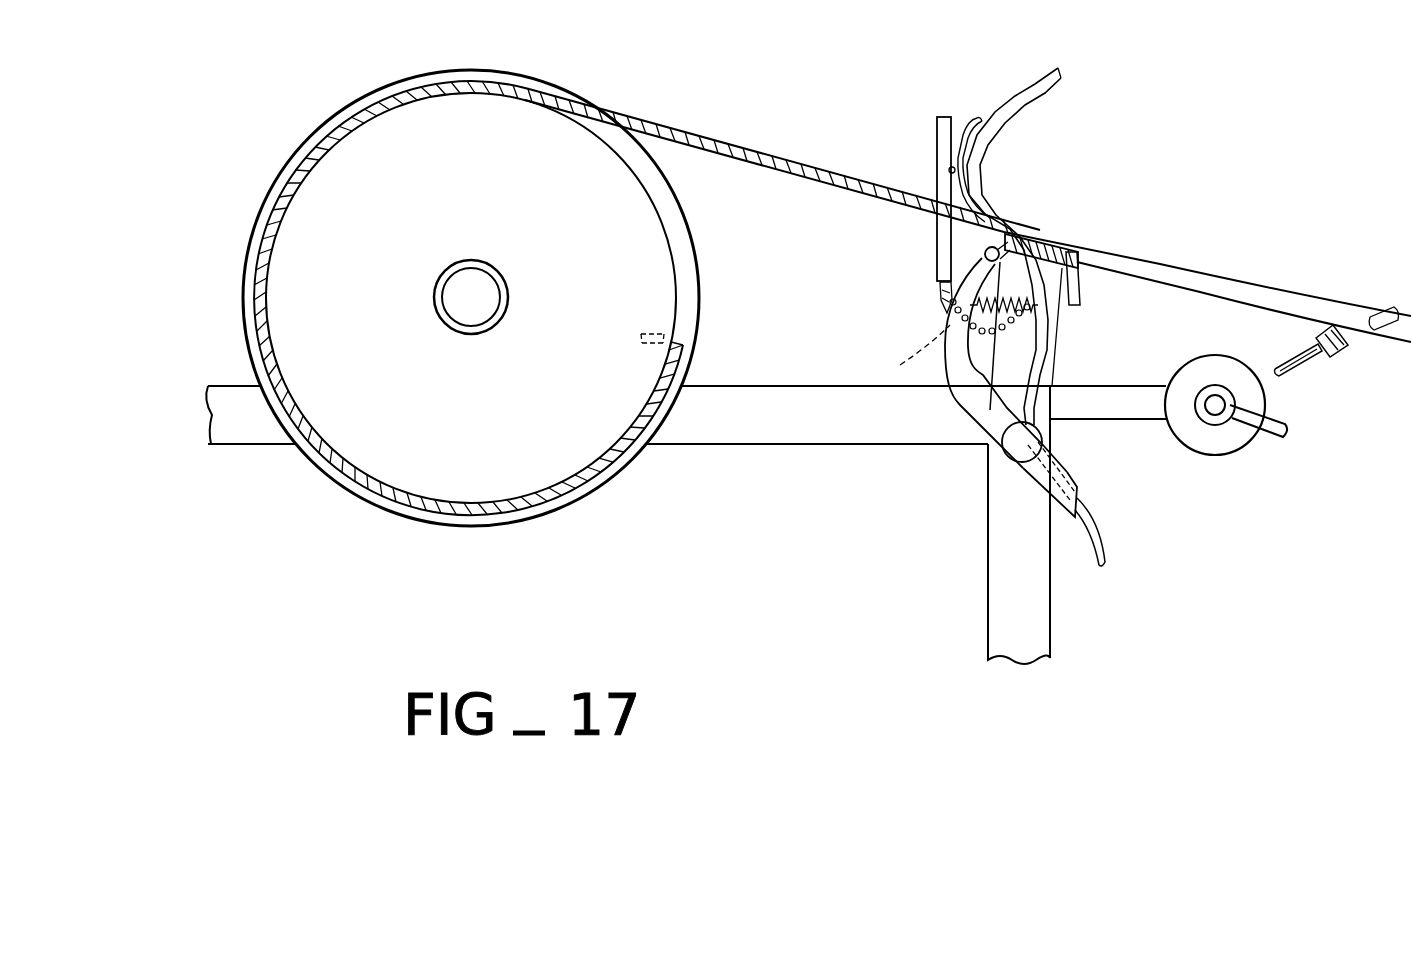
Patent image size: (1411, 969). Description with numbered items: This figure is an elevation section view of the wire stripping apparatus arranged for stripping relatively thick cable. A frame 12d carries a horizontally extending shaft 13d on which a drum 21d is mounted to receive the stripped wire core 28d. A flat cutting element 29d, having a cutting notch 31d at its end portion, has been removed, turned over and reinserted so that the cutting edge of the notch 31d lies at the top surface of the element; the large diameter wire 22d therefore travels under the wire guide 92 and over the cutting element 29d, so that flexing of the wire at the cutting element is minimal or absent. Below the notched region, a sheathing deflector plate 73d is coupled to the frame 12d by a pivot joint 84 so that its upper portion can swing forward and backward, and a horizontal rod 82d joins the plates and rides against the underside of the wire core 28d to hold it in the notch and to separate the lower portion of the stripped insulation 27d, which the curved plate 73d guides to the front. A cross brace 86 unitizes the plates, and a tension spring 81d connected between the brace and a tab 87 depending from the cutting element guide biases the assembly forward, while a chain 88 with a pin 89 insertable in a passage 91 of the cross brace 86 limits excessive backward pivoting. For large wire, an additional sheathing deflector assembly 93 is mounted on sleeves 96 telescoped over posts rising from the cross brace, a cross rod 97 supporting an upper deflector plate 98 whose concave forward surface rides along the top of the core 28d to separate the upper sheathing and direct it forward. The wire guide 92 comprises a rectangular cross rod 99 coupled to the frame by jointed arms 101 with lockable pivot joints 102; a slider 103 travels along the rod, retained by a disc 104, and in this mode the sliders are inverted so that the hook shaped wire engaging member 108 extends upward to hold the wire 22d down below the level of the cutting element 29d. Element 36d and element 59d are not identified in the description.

The frame 12d is at (733, 452).
The shaft 13d is at (492, 292).
The drum 21d is at (667, 224).
The wire 22d is at (1190, 221).
The stripped insulation 27d is at (1062, 70).
The wire core 28d is at (708, 130).
The cutting element 29d is at (1040, 232).
The cutting notch 31d is at (1088, 256).
The strap portion 36d is at (1047, 345).
The handle 59d is at (1262, 440).
The sheathing deflector plate 73d is at (955, 397).
The tension spring 81d is at (947, 352).
The horizontal rod 82d is at (985, 253).
The pivot joint 84 is at (1010, 473).
The cross brace 86 is at (977, 310).
The tab 87 is at (1082, 285).
The chain 88 is at (983, 400).
The pin 89 is at (937, 292).
The passage 91 is at (937, 299).
The wire guide 92 is at (1357, 382).
The sheathing deflector assembly 93 is at (925, 103).
The sleeve 96 is at (937, 128).
The cross rod 97 is at (950, 170).
The upper deflector plate 98 is at (975, 118).
The cross rod 99 is at (1313, 342).
The jointed arm 101 is at (1265, 365).
The lockable pivot joint 102 is at (1210, 452).
The slider 103 is at (1338, 355).
The disc 104 is at (1322, 330).
The hook shaped wire engaging member 108 is at (1410, 300).